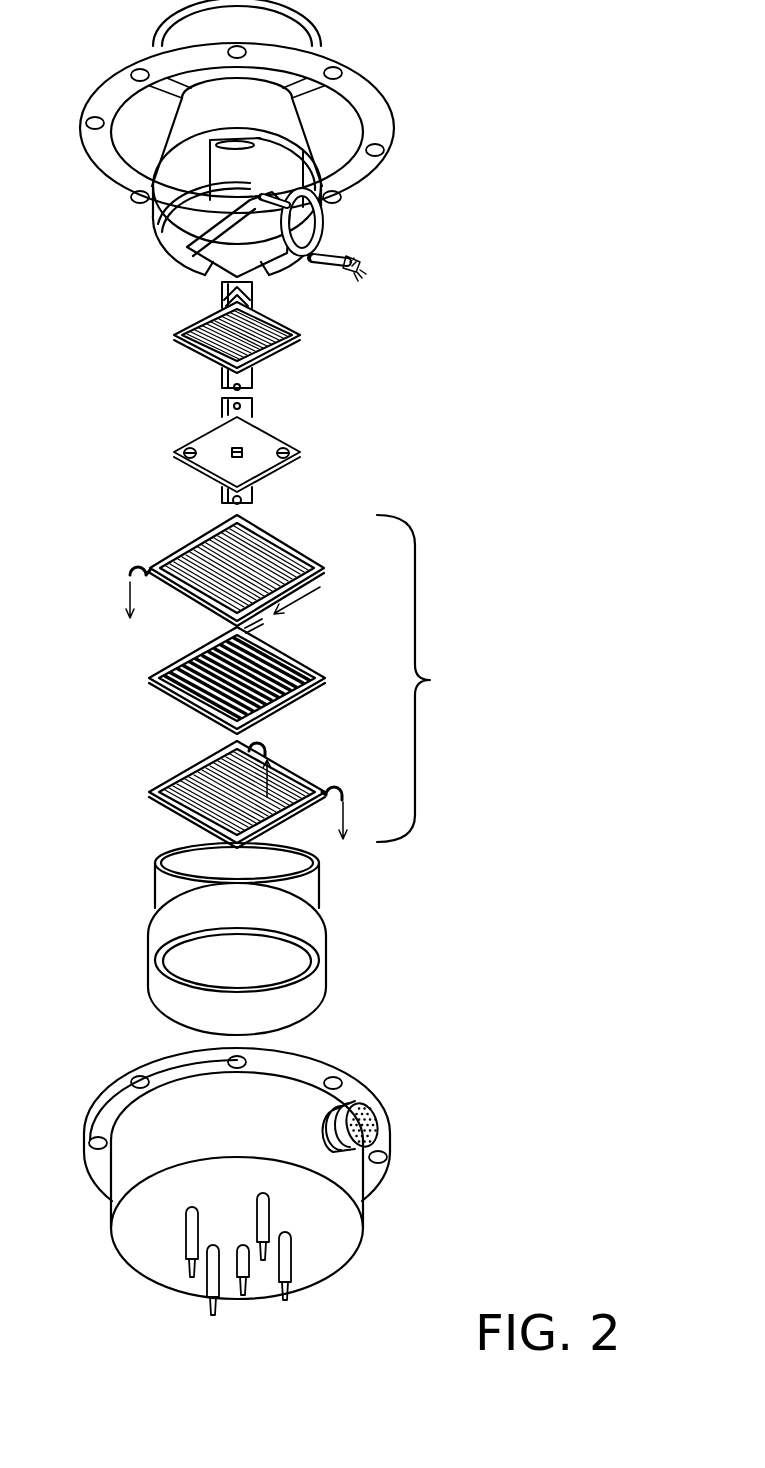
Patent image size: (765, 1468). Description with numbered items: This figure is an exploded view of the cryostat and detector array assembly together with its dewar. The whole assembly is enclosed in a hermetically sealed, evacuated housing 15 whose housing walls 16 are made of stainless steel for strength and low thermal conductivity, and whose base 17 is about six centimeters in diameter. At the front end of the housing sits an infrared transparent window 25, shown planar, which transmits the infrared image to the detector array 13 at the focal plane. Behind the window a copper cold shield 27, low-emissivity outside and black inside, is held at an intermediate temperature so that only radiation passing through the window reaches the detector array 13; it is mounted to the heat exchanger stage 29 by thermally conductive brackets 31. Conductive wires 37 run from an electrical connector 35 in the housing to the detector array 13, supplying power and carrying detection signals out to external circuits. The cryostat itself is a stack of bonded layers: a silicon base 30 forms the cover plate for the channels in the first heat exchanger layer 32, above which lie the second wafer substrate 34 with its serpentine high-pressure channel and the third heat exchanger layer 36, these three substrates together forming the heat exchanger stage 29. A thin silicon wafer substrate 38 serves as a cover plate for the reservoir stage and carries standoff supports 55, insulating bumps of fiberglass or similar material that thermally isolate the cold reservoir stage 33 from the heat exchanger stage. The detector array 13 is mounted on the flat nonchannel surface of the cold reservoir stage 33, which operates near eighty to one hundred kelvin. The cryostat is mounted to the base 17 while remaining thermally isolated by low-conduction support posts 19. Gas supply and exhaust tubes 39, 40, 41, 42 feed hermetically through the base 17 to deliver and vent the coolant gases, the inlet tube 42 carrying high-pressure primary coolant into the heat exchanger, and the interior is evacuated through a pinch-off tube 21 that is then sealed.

The detector array 13 is at (158, 245).
The housing 15 is at (102, 1053).
The housing walls 16 is at (123, 1174).
The base 17 is at (350, 1238).
The support posts 19 is at (330, 948).
The pinch-off tube 21 is at (243, 1288).
The infrared transparent window 25 is at (163, 23).
The cold shield 27 is at (172, 124).
The heat exchanger stage 29 is at (313, 673).
The silicon base 30 is at (322, 885).
The thermally conductive brackets 31 is at (310, 178).
The first heat exchanger layer 32 is at (300, 770).
The cold reservoir stage 33 is at (183, 330).
The second wafer substrate 34 is at (312, 666).
The electrical connector 35 is at (352, 1104).
The third heat exchanger layer 36 is at (287, 540).
The conductive wires 37 is at (362, 255).
The silicon wafer substrate 38 is at (282, 442).
The gas supply tube 39 is at (266, 740).
The exhaust tube 40 is at (343, 788).
The exhaust tube 41 is at (128, 563).
The inlet tube 42 is at (262, 624).
The standoff supports 55 is at (288, 455).